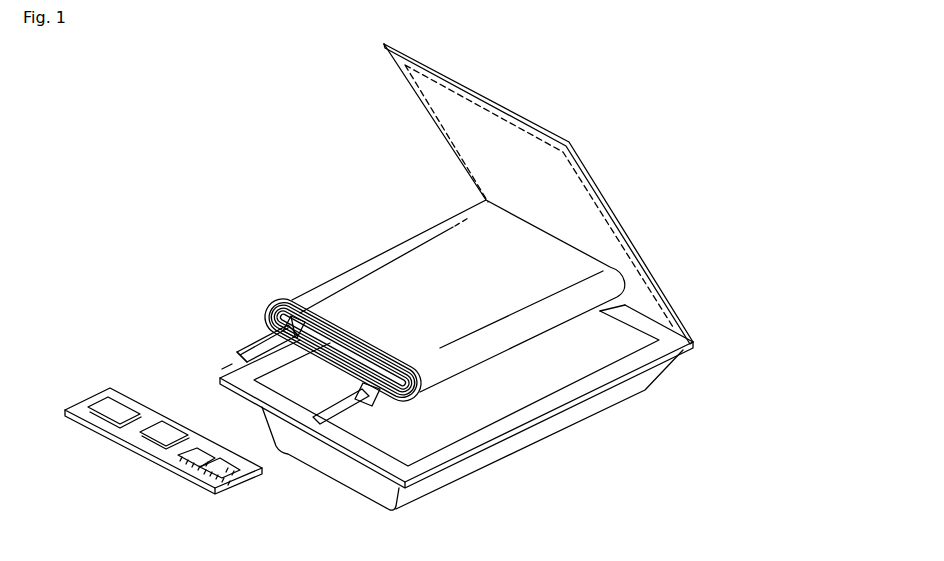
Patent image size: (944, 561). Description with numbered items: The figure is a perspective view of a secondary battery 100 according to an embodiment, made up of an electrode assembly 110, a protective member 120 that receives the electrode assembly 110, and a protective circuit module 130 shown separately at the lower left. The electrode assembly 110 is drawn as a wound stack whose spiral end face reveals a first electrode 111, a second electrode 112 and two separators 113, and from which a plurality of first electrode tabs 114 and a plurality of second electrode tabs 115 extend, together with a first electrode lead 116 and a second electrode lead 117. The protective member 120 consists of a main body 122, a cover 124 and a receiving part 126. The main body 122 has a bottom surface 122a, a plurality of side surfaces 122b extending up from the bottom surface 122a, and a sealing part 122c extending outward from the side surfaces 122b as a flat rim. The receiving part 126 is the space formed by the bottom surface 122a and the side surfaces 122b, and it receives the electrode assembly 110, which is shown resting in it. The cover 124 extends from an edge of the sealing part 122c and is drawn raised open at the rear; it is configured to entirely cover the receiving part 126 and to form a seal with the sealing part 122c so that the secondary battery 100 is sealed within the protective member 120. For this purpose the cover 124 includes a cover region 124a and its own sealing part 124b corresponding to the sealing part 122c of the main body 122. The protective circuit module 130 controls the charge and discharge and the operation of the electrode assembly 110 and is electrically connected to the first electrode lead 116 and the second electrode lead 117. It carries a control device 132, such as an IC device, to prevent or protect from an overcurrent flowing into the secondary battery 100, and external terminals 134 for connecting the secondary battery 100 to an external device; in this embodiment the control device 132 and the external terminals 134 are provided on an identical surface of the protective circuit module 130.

The secondary battery 100 is at (110, 58).
The electrode assembly 110 is at (259, 229).
The first electrode 111 is at (284, 298).
The second electrode 112 is at (274, 312).
The separators 113 is at (268, 316).
The first electrode tabs 114 is at (280, 328).
The second electrode tabs 115 is at (348, 385).
The first electrode lead 116 is at (245, 348).
The second electrode lead 117 is at (222, 369).
The protective member 120 is at (795, 249).
The main body 122 is at (740, 402).
The bottom surface 122a is at (587, 405).
The side surfaces 122b is at (523, 400).
The sealing part 122c is at (612, 374).
The cover 124 is at (740, 228).
The cover region 124a is at (612, 248).
The sealing part 124b is at (664, 304).
The receiving part 126 is at (586, 359).
The protective circuit module 130 is at (55, 469).
The control device 132 is at (153, 433).
The external terminals 134 is at (200, 467).